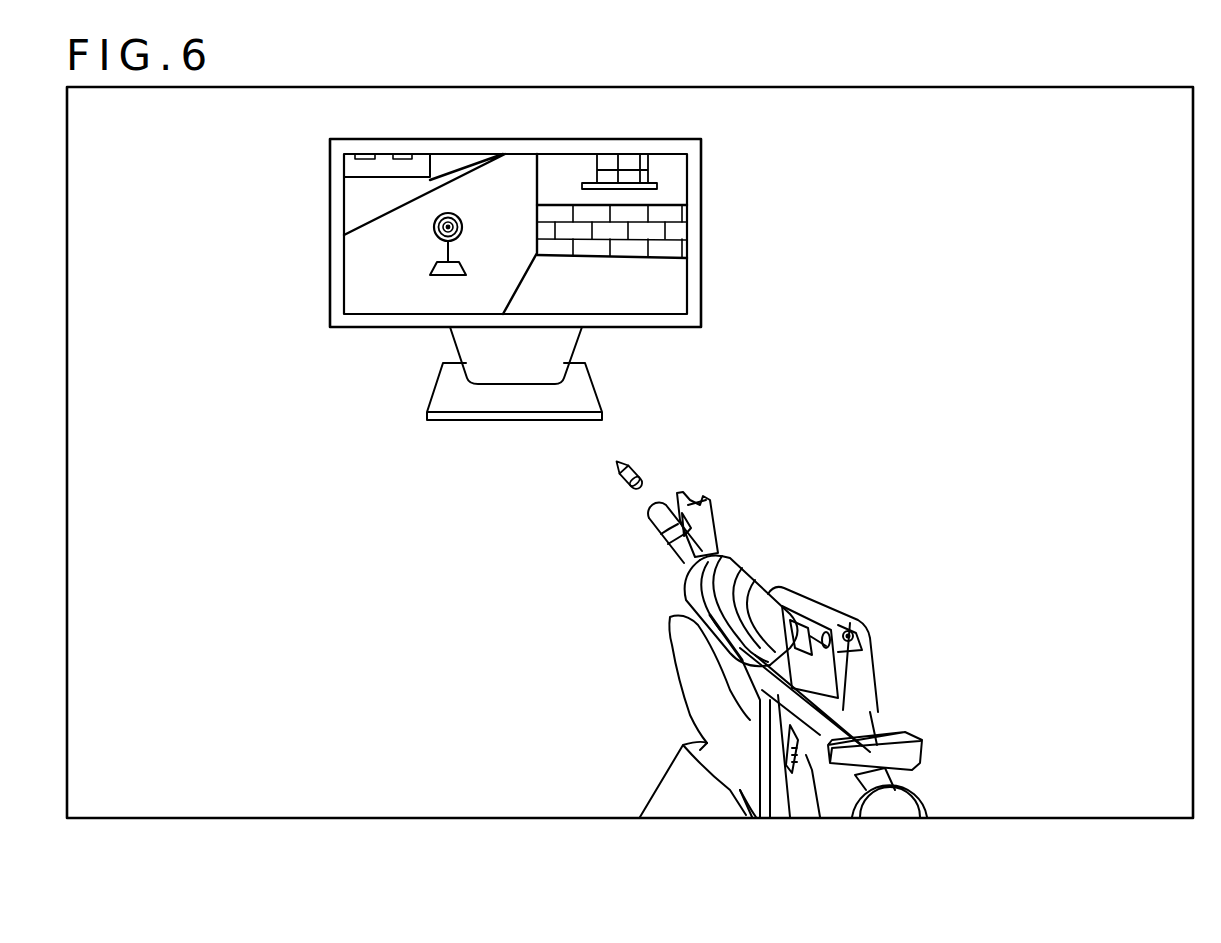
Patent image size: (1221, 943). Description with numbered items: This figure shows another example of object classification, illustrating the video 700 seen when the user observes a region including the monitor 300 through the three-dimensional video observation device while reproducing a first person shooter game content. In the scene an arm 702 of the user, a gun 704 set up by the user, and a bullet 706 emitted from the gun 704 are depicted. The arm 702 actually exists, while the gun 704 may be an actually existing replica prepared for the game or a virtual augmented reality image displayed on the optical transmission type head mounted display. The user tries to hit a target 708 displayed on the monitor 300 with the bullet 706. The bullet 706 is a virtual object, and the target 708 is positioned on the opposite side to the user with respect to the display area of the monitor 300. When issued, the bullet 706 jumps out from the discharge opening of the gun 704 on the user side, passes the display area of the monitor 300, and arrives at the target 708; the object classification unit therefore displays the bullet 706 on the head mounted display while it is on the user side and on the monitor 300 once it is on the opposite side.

The game screen display 700 is at (631, 87).
The monitor 300 is at (702, 232).
The target 708 is at (432, 226).
The bullet 706 is at (636, 468).
The gun 704 is at (828, 606).
The arm 702 is at (656, 786).